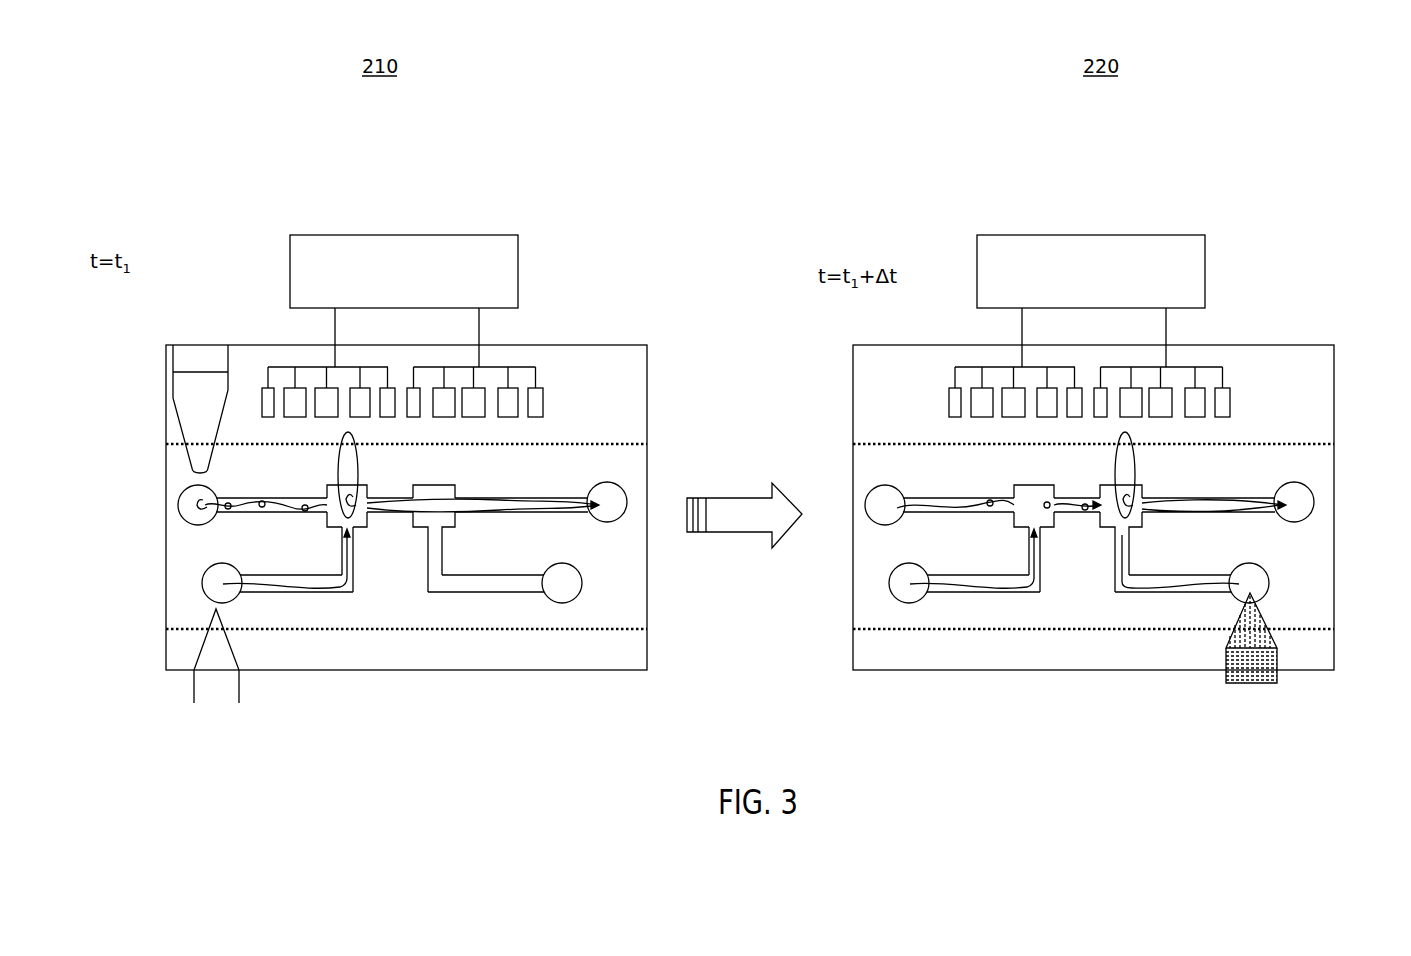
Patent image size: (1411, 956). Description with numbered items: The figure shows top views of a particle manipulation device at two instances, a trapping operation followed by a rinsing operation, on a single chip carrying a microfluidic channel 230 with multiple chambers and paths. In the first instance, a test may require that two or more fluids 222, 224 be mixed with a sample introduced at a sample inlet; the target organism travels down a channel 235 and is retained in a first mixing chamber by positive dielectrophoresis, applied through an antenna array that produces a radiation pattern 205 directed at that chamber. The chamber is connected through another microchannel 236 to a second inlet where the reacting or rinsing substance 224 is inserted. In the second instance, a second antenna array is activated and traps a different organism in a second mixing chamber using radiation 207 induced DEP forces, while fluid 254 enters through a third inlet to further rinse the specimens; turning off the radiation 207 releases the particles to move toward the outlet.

The radiation pattern 205 is at (358, 470).
The radiation 207 is at (1167, 475).
The fluid 222 is at (185, 392).
The fluid 224 is at (213, 687).
The microfluidic channel 230 is at (470, 481).
The channel 235 is at (240, 495).
The microchannel 236 is at (320, 572).
The fluid 254 is at (1303, 658).